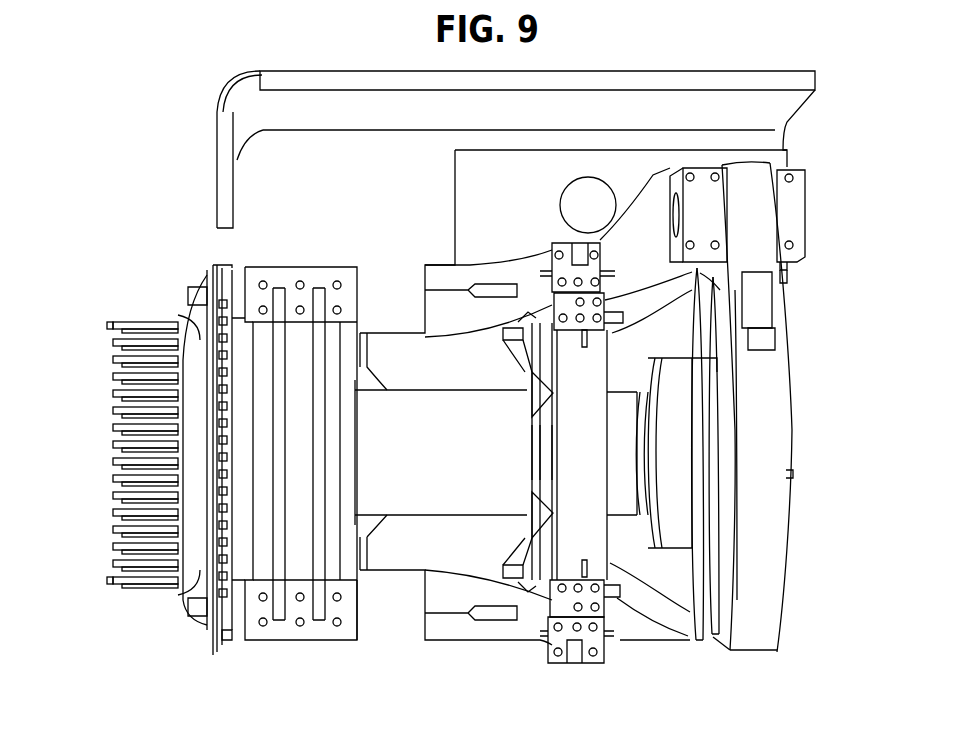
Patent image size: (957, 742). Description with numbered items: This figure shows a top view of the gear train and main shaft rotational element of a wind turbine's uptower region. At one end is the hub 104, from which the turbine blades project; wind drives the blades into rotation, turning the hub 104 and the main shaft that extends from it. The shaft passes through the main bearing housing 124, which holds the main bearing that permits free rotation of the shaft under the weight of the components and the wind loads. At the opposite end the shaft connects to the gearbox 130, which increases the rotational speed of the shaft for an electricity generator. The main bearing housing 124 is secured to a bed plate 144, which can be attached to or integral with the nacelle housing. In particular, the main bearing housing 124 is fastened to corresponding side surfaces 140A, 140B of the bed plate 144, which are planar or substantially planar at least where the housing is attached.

The hub 104 is at (104, 368).
The main bearing housing 124 is at (295, 543).
The gearbox 130 is at (814, 384).
The side surface 140A is at (385, 617).
The side surface 140B is at (268, 196).
The bed plate 144 is at (358, 380).